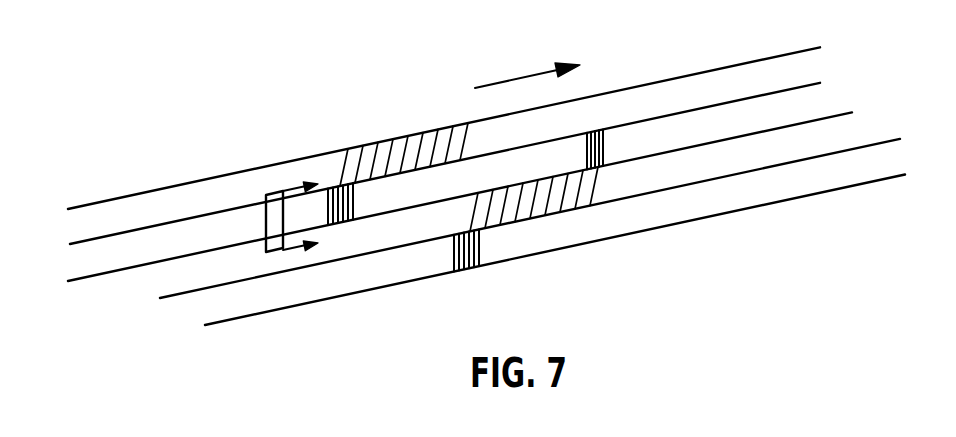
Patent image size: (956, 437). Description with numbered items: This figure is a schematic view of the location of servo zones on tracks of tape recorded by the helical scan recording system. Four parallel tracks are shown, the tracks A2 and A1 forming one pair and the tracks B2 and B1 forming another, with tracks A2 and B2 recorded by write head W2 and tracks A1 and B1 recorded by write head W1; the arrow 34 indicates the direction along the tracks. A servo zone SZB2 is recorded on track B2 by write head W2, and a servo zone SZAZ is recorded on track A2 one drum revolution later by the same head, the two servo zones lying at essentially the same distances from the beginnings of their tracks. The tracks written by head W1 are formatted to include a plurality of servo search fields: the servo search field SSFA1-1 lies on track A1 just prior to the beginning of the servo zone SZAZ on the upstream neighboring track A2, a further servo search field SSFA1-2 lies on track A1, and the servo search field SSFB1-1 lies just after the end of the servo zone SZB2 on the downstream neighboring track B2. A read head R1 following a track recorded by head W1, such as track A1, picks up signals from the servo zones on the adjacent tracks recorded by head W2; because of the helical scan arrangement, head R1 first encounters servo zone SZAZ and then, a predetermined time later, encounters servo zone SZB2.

The track A2 is at (444, 145).
The track A1 is at (460, 196).
The track B2 is at (530, 218).
The track B1 is at (555, 250).
The servo zone SZ_A2 SZAZ is at (380, 155).
The servo zone SZ_B2 SZB2 is at (545, 205).
The servo search field SSF_A1-1 SSFA1-1 is at (333, 187).
The servo search field SSF_A1-2 SSFA1-2 is at (601, 130).
The servo search field SSF_B1-1 SSFB1-1 is at (479, 271).
The direction of propagation 34 is at (510, 82).
The read head R1 is at (271, 280).